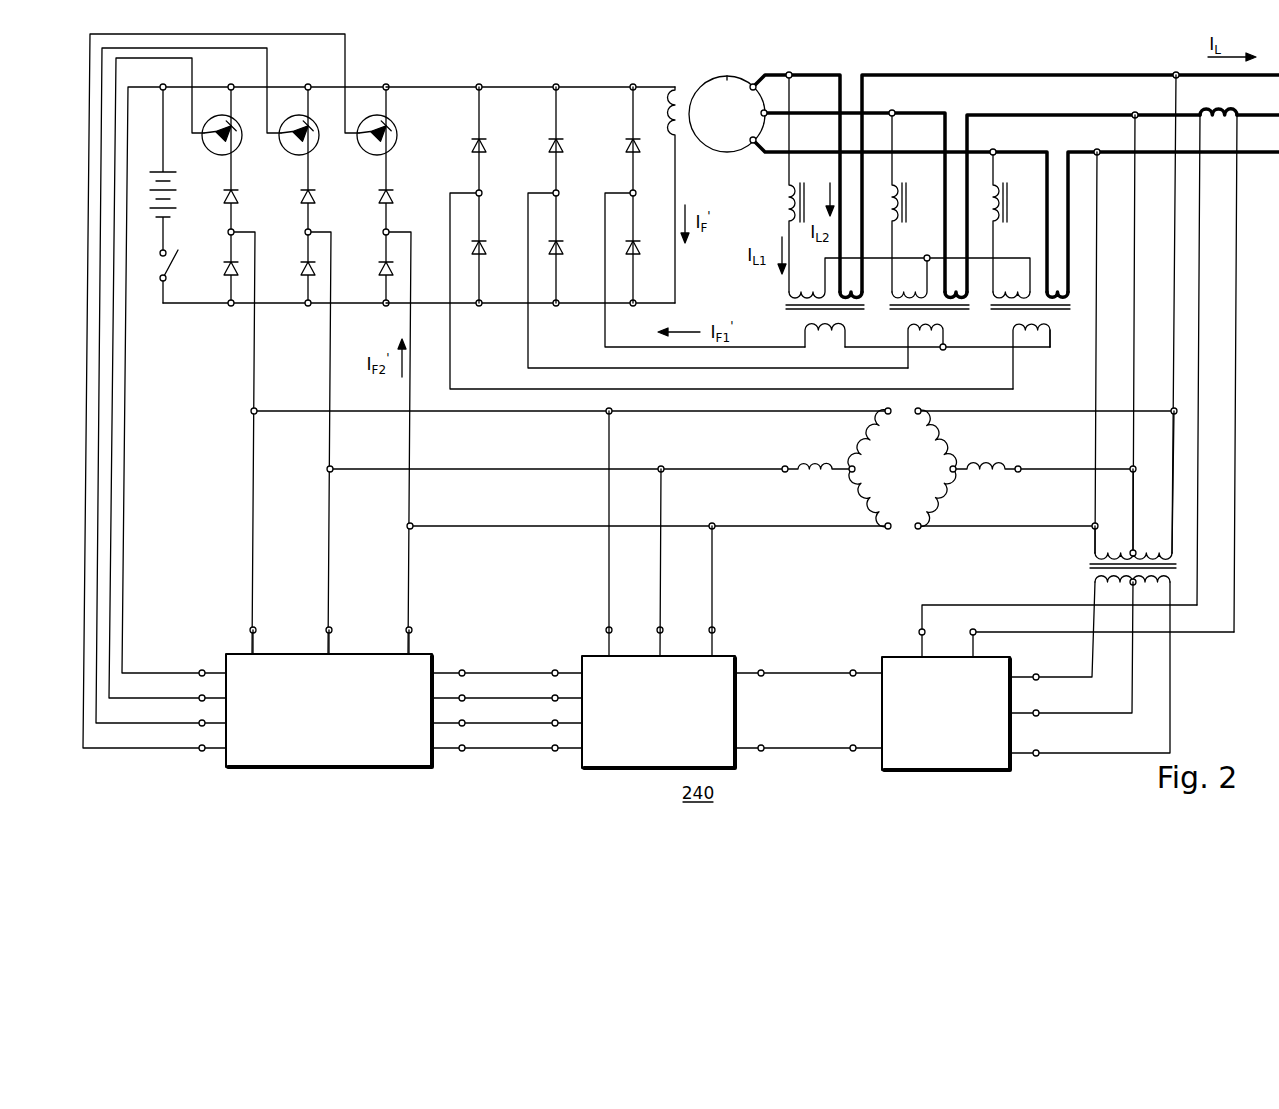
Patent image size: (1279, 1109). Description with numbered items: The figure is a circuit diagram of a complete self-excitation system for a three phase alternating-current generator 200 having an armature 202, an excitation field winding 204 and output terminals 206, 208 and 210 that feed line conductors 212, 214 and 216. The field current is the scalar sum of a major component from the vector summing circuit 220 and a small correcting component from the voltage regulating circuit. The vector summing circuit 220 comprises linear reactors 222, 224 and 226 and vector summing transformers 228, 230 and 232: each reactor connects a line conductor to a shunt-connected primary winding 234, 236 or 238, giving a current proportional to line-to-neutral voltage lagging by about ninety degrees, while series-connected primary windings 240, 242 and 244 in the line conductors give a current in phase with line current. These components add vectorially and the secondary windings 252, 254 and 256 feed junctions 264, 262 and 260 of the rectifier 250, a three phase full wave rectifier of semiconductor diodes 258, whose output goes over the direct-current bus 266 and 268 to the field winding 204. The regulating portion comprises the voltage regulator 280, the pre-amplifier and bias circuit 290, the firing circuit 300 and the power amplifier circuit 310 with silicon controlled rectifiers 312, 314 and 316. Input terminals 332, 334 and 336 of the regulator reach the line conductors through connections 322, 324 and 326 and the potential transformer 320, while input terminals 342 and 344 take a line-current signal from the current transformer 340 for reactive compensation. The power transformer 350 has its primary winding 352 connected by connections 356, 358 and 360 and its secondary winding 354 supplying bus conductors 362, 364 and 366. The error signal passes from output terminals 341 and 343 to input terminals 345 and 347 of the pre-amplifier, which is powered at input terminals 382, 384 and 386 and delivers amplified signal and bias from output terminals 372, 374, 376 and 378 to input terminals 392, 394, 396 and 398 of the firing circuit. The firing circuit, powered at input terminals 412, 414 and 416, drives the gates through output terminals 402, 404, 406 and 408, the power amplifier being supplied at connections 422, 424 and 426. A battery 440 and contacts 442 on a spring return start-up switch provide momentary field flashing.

The three phase alternating-current generator 200 is at (693, 177).
The armature 202 is at (712, 78).
The excitation field winding 204 is at (657, 195).
The output terminal 206 is at (753, 84).
The output terminal 208 is at (770, 111).
The output terminal 210 is at (753, 145).
The line conductor 212 is at (1085, 72).
The line conductor 214 is at (1085, 112).
The line conductor 216 is at (1099, 150).
The vector summing circuit 220 is at (734, 299).
The linear reactor 222 is at (805, 186).
The linear reactor 224 is at (906, 186).
The linear reactor 226 is at (1010, 186).
The vector summing transformer 228 is at (803, 328).
The vector summing transformer 230 is at (905, 328).
The vector summing transformer 232 is at (1010, 328).
The primary winding 234 is at (786, 300).
The primary winding 236 is at (922, 286).
The primary winding 238 is at (1021, 286).
The primary winding 240 is at (864, 311).
The primary winding 242 is at (969, 311).
The primary winding 244 is at (1070, 311).
The rectifier 250 is at (502, 81).
The secondary winding 252 is at (875, 358).
The secondary winding 254 is at (981, 357).
The secondary winding 256 is at (1035, 350).
The semiconductor diodes 258 is at (471, 146).
The junction 260 is at (477, 192).
The junction 262 is at (554, 192).
The junction 264 is at (631, 192).
The direct-current bus 266 is at (651, 85).
The direct-current bus 268 is at (652, 305).
The voltage regulator 280 is at (970, 771).
The pre-amplifier and bias circuit 290 is at (668, 770).
The firing circuit 300 is at (352, 769).
The power amplifier circuit 310 is at (278, 332).
The silicon controlled rectifier 312 is at (207, 121).
The silicon controlled rectifier 314 is at (284, 121).
The silicon controlled rectifier 316 is at (362, 121).
The potential transformer 320 is at (1090, 566).
The connection 322 is at (1174, 73).
The connection 324 is at (1132, 104).
The connection 326 is at (1098, 153).
The input terminal 332 is at (1036, 750).
The input terminal 334 is at (1036, 710).
The input terminal 336 is at (1036, 674).
The current transformer 340 is at (1203, 112).
The output terminal 341 is at (855, 651).
The input terminal 342 is at (919, 632).
The output terminal 343 is at (855, 734).
The input terminal 344 is at (975, 630).
The input terminal 345 is at (760, 670).
The input terminal 347 is at (760, 745).
The power transformer 350 is at (891, 477).
The primary winding 352 is at (955, 467).
The secondary winding 354 is at (854, 467).
The connection 356 is at (1093, 525).
The connection 358 is at (1132, 469).
The connection 360 is at (1173, 415).
The voltage supply bus conductor 362 is at (540, 413).
The voltage supply bus conductor 364 is at (538, 468).
The voltage supply bus conductor 366 is at (538, 525).
The output terminal 372 is at (557, 651).
The output terminal 374 is at (556, 683).
The output terminal 376 is at (556, 708).
The output terminal 378 is at (556, 734).
The input terminal 382 is at (606, 630).
The input terminal 384 is at (657, 630).
The input terminal 386 is at (709, 630).
The input terminal 392 is at (462, 670).
The input terminal 394 is at (462, 695).
The input terminal 396 is at (462, 720).
The input terminal 398 is at (462, 745).
The output terminal 402 is at (200, 670).
The output terminal 404 is at (200, 695).
The output terminal 406 is at (200, 720).
The output terminal 408 is at (200, 745).
The input terminal 412 is at (257, 630).
The input terminal 414 is at (333, 630).
The input terminal 416 is at (413, 630).
The connection 422 is at (234, 231).
The connection 424 is at (311, 231).
The connection 426 is at (389, 231).
The battery 440 is at (178, 207).
The contacts 442 is at (172, 272).